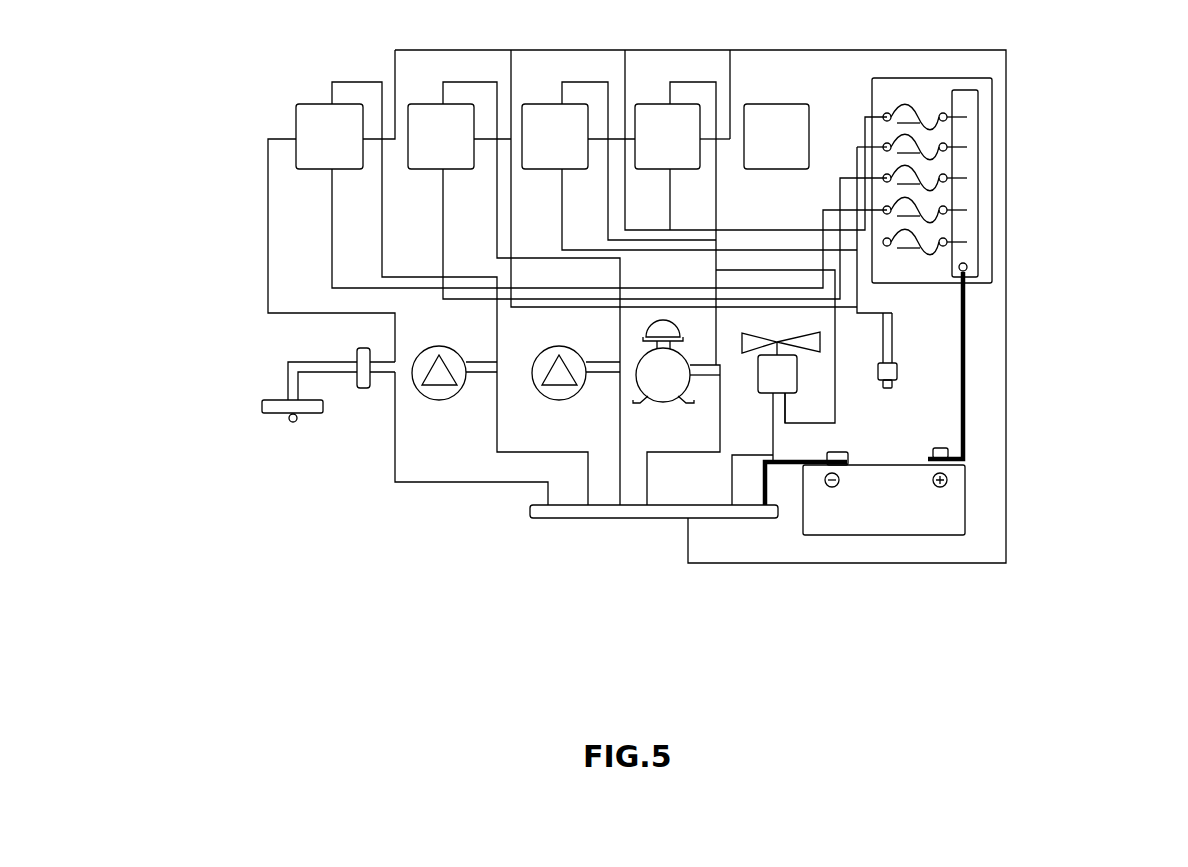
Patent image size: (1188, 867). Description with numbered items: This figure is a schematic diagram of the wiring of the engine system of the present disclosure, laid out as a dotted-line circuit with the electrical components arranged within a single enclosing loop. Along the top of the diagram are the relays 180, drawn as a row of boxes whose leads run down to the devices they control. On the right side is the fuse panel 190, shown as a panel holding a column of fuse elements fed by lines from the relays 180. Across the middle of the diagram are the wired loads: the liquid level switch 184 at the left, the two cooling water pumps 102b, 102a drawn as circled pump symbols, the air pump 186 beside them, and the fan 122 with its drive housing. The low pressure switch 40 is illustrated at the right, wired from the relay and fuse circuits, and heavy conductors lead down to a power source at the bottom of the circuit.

The relay 180 is at (310, 137).
The fuse panel 190 is at (976, 205).
The low pressure switch 40 is at (895, 375).
The liquid level switch 184 is at (260, 400).
The cooling water pump 102b is at (422, 397).
The cooling water pump 102a is at (559, 397).
The air pump 186 is at (660, 400).
The fan 122 is at (763, 390).